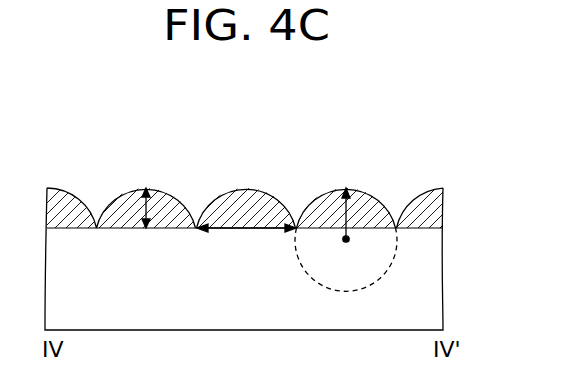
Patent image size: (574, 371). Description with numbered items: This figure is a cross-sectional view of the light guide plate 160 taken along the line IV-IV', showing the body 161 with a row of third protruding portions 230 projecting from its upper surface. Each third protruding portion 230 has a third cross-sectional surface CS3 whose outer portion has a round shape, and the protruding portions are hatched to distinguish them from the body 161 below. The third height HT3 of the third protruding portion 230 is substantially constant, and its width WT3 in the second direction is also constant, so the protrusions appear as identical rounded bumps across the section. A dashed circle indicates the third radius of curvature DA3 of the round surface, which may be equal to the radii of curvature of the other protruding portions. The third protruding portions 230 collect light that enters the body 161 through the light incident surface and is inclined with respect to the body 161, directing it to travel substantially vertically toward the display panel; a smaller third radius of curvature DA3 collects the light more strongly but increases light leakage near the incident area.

The light guide plate 160 is at (456, 138).
The body 161 is at (430, 290).
The third protruding portion 230 is at (222, 186).
The third height HT3 is at (145, 204).
The width WT3 is at (252, 226).
The third cross-sectional surface CS3 is at (275, 211).
The third radius of curvature DA3 is at (348, 210).